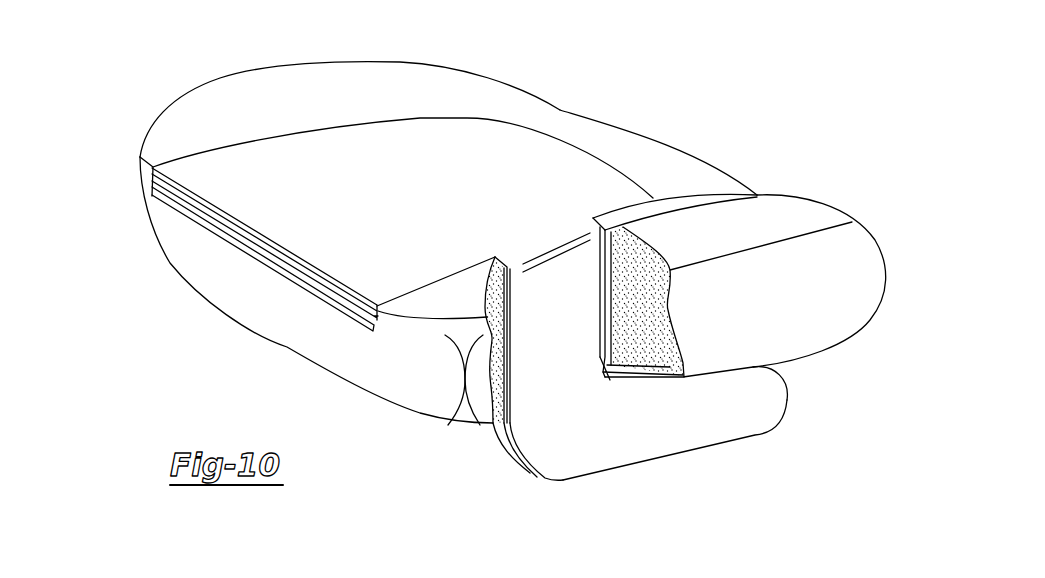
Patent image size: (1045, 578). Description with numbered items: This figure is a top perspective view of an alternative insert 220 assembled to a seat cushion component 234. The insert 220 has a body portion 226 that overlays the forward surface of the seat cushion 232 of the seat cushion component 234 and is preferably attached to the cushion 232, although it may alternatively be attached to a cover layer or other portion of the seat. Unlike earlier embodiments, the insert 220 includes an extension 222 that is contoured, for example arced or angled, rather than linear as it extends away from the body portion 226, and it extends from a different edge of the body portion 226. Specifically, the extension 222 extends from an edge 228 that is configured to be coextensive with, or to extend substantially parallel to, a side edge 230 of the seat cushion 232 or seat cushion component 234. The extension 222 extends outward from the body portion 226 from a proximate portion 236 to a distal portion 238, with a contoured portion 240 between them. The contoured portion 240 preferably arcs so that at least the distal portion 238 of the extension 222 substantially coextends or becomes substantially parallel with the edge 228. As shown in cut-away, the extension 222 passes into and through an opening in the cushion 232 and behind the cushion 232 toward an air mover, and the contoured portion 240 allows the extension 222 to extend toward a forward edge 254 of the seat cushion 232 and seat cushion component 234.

The insert 220 is at (515, 182).
The extension 222 is at (530, 481).
The body portion 226 is at (425, 206).
The edge 228 is at (623, 203).
The side edge 230 is at (757, 225).
The seat cushion 232 is at (847, 270).
The seat cushion component 234 is at (811, 380).
The proximate portion 236 is at (572, 329).
The distal portion 238 is at (740, 414).
The contoured portion 240 is at (597, 441).
The forward edge 254 is at (707, 162).